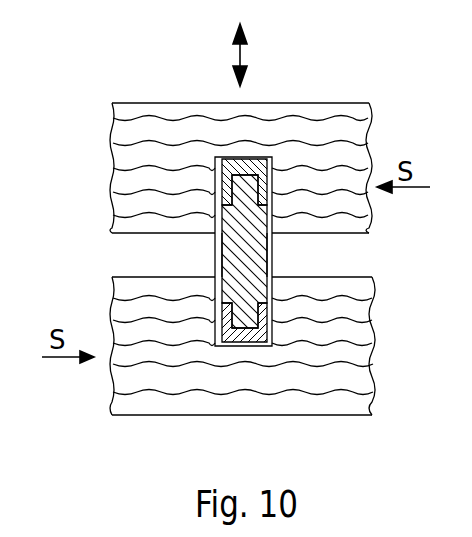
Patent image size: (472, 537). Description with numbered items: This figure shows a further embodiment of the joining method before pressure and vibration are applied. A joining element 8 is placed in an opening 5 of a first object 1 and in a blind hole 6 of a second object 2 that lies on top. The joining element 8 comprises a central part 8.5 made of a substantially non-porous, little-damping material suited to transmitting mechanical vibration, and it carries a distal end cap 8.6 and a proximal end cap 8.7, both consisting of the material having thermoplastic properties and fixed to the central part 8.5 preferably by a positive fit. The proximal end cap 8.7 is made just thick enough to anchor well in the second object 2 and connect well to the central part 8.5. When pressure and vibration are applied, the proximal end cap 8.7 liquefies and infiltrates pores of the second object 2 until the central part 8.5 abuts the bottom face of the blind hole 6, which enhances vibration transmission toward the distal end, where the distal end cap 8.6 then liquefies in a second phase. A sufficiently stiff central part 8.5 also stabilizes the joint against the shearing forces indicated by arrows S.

The first object 1 is at (357, 307).
The second object 2 is at (357, 130).
The through opening 5 is at (214, 328).
The blind hole 6 is at (214, 187).
The joining element 8 is at (267, 253).
The central part 8.5 is at (228, 253).
The distal end cap 8.6 is at (245, 335).
The proximal end cap 8.7 is at (252, 167).